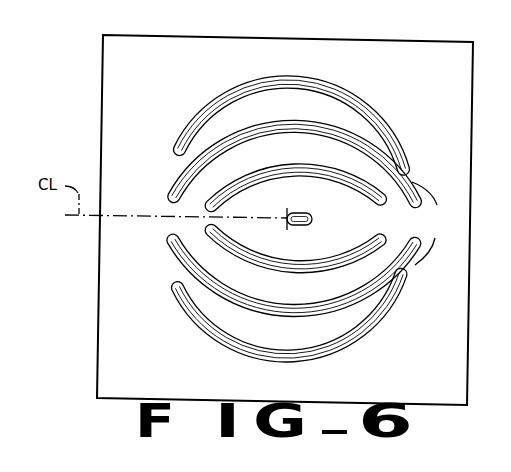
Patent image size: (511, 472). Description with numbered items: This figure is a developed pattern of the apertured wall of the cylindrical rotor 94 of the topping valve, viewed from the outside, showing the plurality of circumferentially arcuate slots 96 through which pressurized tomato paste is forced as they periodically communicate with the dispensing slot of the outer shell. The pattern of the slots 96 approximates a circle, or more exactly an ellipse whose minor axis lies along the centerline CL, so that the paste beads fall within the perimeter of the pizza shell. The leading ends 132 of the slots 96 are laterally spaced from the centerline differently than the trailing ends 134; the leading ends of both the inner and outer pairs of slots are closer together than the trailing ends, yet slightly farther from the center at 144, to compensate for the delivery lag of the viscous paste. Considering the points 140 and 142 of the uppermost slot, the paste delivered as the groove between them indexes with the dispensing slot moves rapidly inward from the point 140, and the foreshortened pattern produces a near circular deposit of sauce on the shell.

The rotor 94 is at (361, 46).
The point of the uppermost slot 140 is at (284, 80).
The point of the uppermost slot 142 is at (261, 203).
The trailing ends of the slots 134 is at (176, 153).
The circumferentially arcuate slots 96 is at (312, 90).
The center 144 is at (287, 218).
The leading ends of the slots 132 is at (387, 208).